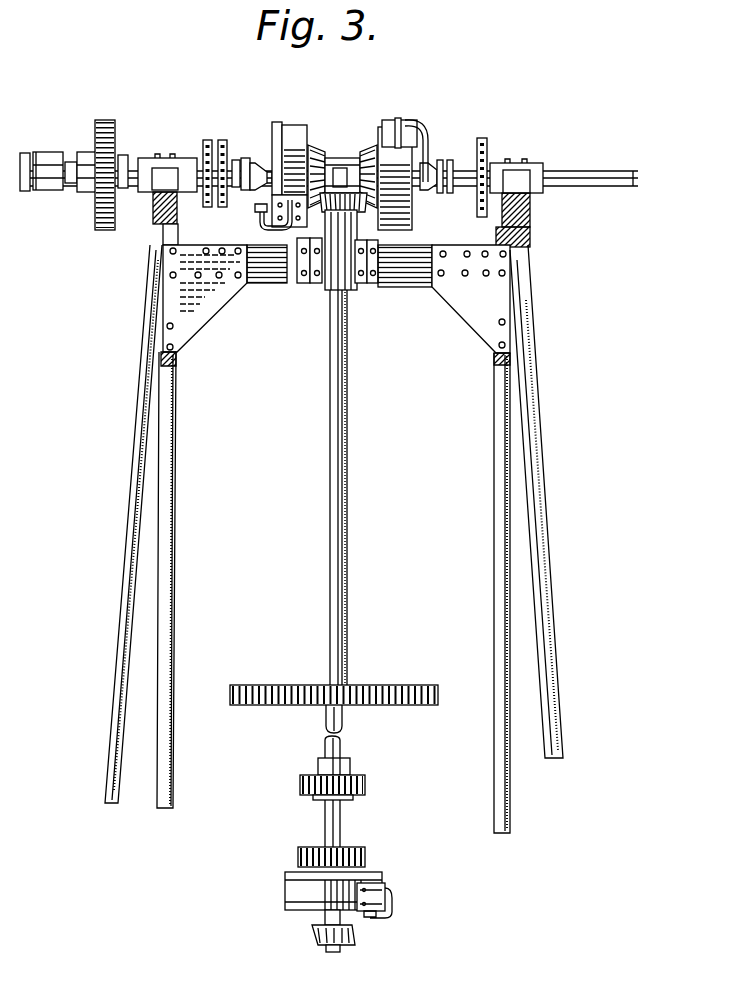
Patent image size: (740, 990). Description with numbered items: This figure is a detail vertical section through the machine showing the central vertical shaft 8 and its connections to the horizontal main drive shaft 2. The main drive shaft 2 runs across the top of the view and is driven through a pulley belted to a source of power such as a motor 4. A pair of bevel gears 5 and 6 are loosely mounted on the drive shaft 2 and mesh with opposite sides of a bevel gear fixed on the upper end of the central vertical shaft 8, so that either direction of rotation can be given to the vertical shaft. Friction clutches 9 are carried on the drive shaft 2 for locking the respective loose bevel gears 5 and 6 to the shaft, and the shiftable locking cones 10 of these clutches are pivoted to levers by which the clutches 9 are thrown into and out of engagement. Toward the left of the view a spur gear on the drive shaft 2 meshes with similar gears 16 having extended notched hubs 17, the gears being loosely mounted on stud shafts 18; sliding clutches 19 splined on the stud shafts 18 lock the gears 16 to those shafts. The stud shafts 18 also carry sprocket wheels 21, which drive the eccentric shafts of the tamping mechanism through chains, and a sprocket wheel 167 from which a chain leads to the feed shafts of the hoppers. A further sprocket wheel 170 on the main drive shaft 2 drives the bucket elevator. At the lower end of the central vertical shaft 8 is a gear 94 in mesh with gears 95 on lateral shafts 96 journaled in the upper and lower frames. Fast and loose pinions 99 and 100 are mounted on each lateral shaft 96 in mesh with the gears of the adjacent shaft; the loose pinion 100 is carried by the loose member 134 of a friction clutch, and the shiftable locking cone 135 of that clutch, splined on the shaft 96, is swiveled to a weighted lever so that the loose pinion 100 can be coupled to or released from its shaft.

The main drive shaft 2 is at (458, 170).
The motor 4 is at (303, 248).
The bevel gear 5 is at (320, 152).
The bevel gear 6 is at (368, 150).
The central vertical shaft 8 is at (348, 406).
The friction clutches 9 is at (297, 137).
The shiftable locking cones 10 is at (250, 180).
The gears 16 is at (114, 130).
The extended notched hubs 17 is at (87, 157).
The stud shafts 18 is at (140, 160).
The sliding clutches 19 is at (48, 152).
The sprocket wheels 21 is at (208, 160).
The sprocket wheel 167 is at (237, 178).
The sprocket wheel 170 is at (488, 145).
The gear 94 is at (242, 705).
The gears 95 is at (304, 705).
The lateral shafts 96 is at (345, 746).
The fast pinion 99 is at (367, 786).
The loose pinion 100 is at (367, 856).
The loose member of friction clutch 134 is at (285, 892).
The shiftable locking cone 135 is at (318, 938).